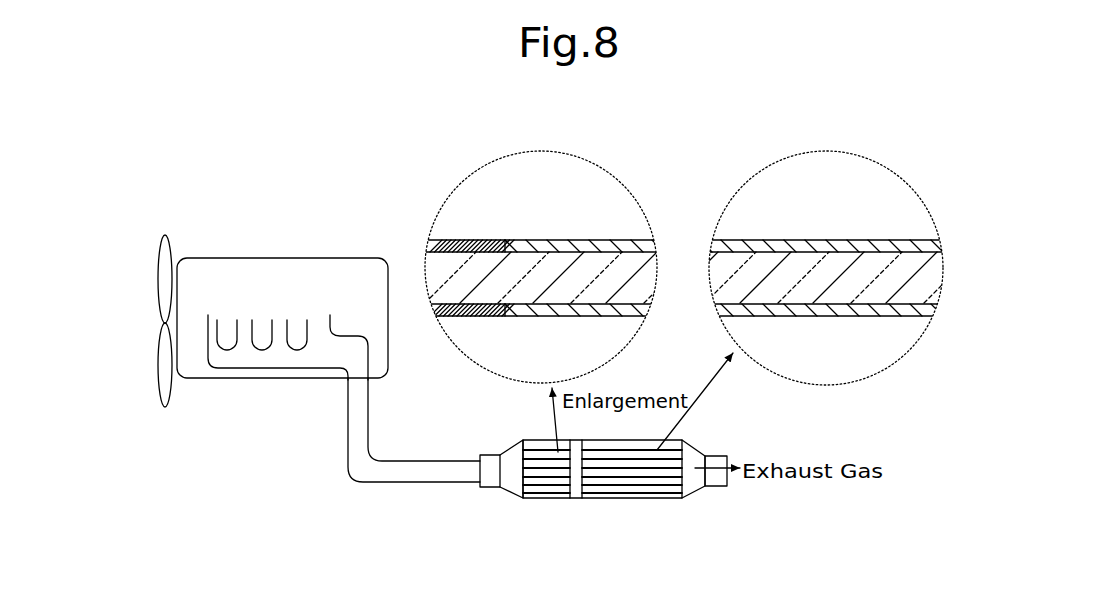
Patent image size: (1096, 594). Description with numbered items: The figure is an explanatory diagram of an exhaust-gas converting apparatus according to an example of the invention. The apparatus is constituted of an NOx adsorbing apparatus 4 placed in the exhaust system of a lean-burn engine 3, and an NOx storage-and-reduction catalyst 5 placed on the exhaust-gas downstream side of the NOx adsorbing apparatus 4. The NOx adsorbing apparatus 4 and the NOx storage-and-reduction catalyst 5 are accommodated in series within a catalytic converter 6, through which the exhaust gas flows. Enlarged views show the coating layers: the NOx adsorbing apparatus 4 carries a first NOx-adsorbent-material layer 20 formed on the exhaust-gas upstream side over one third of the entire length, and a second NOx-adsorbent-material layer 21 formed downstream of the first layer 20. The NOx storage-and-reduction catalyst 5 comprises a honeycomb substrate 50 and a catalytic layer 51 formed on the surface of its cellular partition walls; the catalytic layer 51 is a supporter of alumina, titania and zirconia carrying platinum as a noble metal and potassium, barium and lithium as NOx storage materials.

The lean-burn engine 3 is at (235, 278).
The NOx adsorbing apparatus 4 is at (551, 485).
The NOx storage-and-reduction catalyst 5 is at (638, 485).
The catalytic converter 6 is at (693, 447).
The first NOx-adsorbent-material layer 20 is at (472, 243).
The second NOx-adsorbent-material layer 21 is at (578, 243).
The honeycomb substrate 50 is at (926, 284).
The catalytic layer 51 is at (883, 244).